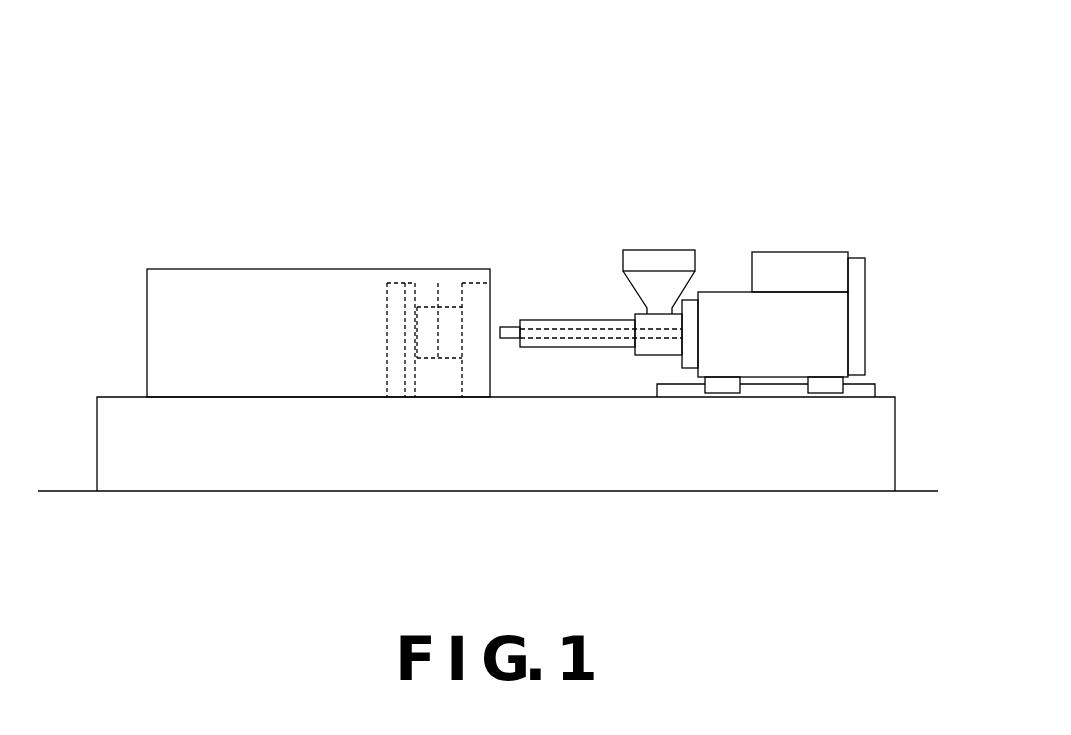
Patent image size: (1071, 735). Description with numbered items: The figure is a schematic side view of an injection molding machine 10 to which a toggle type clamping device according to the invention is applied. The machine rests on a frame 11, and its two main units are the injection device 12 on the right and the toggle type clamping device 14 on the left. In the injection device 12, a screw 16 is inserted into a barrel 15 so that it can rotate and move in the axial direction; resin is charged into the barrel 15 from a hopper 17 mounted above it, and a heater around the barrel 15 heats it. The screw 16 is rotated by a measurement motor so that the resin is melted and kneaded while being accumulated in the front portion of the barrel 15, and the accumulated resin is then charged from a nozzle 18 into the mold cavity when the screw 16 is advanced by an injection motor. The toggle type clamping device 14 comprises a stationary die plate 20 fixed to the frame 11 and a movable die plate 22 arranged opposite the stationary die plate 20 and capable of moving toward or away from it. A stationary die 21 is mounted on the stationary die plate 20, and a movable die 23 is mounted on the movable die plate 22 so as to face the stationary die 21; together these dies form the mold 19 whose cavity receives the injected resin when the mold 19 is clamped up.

The injection molding machine 10 is at (613, 124).
The frame 11 is at (118, 425).
The injection device 12 is at (746, 231).
The toggle type clamping device 14 is at (335, 258).
The barrel 15 is at (551, 319).
The screw 16 is at (599, 335).
The hopper 17 is at (656, 262).
The nozzle 18 is at (511, 340).
The mold 19 is at (495, 203).
The stationary die plate 20 is at (464, 398).
The stationary die 21 is at (453, 312).
The movable die plate 22 is at (410, 398).
The movable die 23 is at (427, 312).